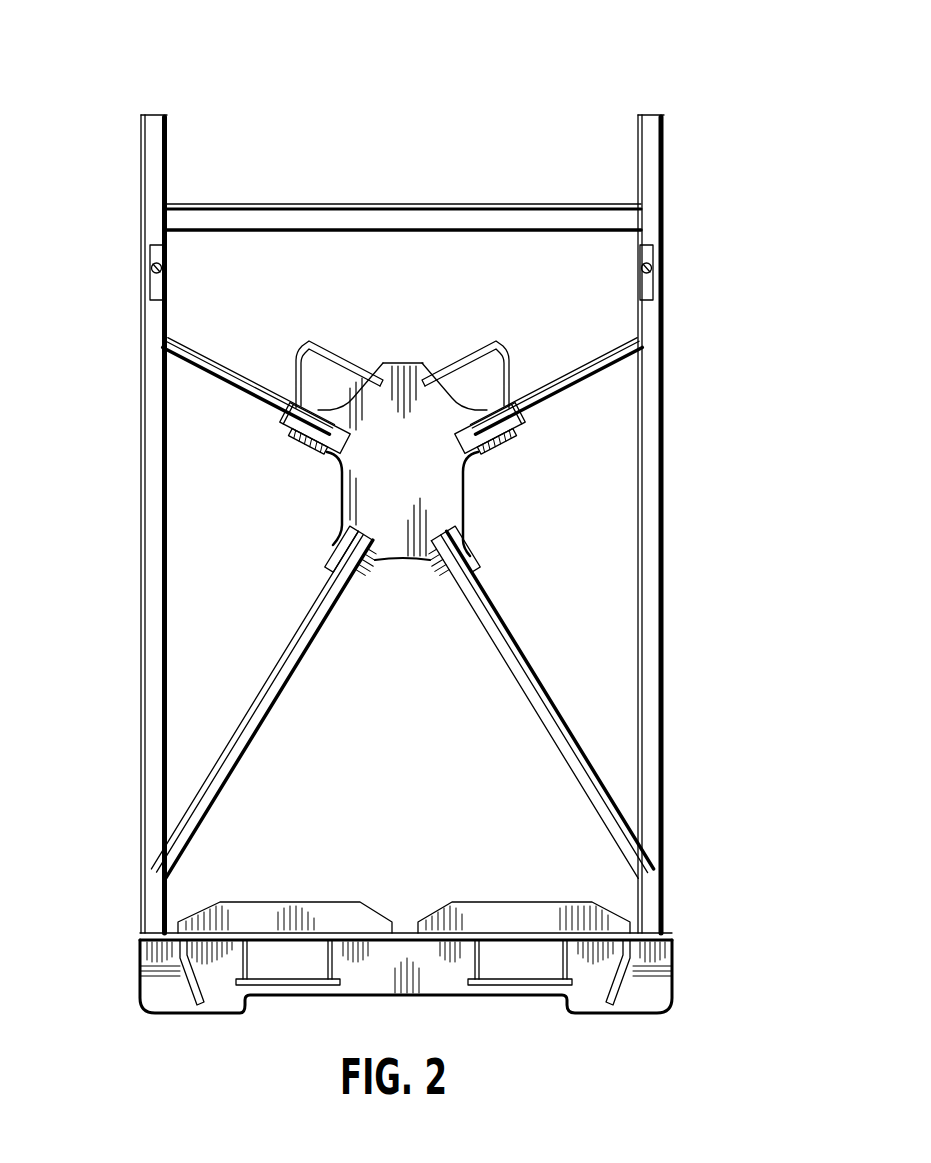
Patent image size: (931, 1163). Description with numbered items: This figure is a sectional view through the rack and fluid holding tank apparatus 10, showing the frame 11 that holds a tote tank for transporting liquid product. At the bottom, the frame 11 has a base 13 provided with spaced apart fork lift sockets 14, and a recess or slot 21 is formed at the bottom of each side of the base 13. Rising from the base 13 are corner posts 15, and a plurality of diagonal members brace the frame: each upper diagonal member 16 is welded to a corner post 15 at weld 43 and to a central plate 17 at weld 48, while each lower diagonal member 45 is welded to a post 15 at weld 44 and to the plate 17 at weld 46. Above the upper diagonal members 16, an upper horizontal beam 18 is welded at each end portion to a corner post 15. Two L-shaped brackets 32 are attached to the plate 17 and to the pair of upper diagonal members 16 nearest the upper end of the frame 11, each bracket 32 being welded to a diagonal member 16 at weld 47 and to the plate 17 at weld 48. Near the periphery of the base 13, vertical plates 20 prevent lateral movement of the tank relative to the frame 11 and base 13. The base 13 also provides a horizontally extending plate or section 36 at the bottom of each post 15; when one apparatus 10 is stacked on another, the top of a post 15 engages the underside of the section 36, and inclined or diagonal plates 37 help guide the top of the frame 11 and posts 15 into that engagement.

The rack and fluid holding tank apparatus 10 is at (548, 80).
The frame 11 is at (409, 524).
The base 13 is at (405, 991).
The fork lift sockets 14 is at (282, 952).
The corner posts 15 is at (155, 757).
The upper diagonal members 16 is at (246, 386).
The plate 17 is at (466, 505).
The upper horizontal beams 18 is at (487, 213).
The vertical plates 20 is at (300, 907).
The recess or slot 21 is at (496, 1010).
The L-shaped bracket 32 is at (300, 348).
The horizontally extending plate or section 36 is at (140, 938).
The inclined or diagonal plates 37 is at (182, 996).
The weld 43 is at (165, 341).
The weld 44 is at (163, 866).
The lower diagonal members 45 is at (246, 735).
The weld 46 is at (430, 562).
The weld 47 is at (298, 432).
The weld 48 is at (428, 372).